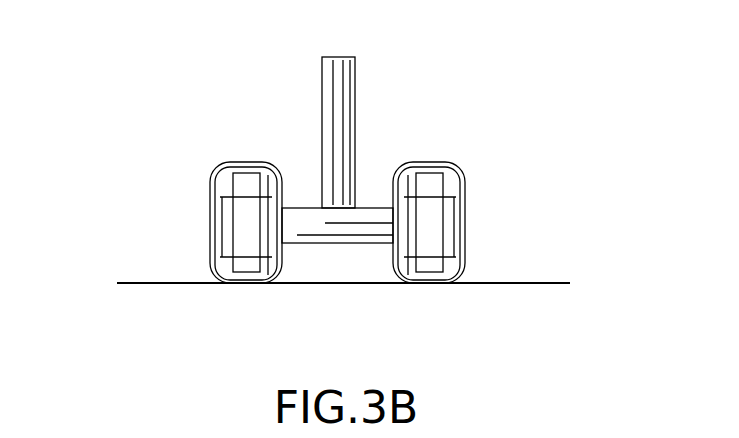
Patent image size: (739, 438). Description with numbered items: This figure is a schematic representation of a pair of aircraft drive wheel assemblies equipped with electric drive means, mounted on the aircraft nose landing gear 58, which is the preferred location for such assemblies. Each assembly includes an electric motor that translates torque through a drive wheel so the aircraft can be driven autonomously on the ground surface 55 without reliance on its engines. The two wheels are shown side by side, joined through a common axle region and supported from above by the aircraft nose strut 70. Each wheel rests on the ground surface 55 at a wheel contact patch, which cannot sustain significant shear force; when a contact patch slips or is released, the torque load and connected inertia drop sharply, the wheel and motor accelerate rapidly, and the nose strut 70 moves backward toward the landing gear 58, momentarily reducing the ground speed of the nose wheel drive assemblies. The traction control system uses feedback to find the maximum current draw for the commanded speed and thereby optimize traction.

The ground surface 55 is at (535, 281).
The nose landing gear 58 is at (197, 203).
The aircraft nose strut 70 is at (326, 81).